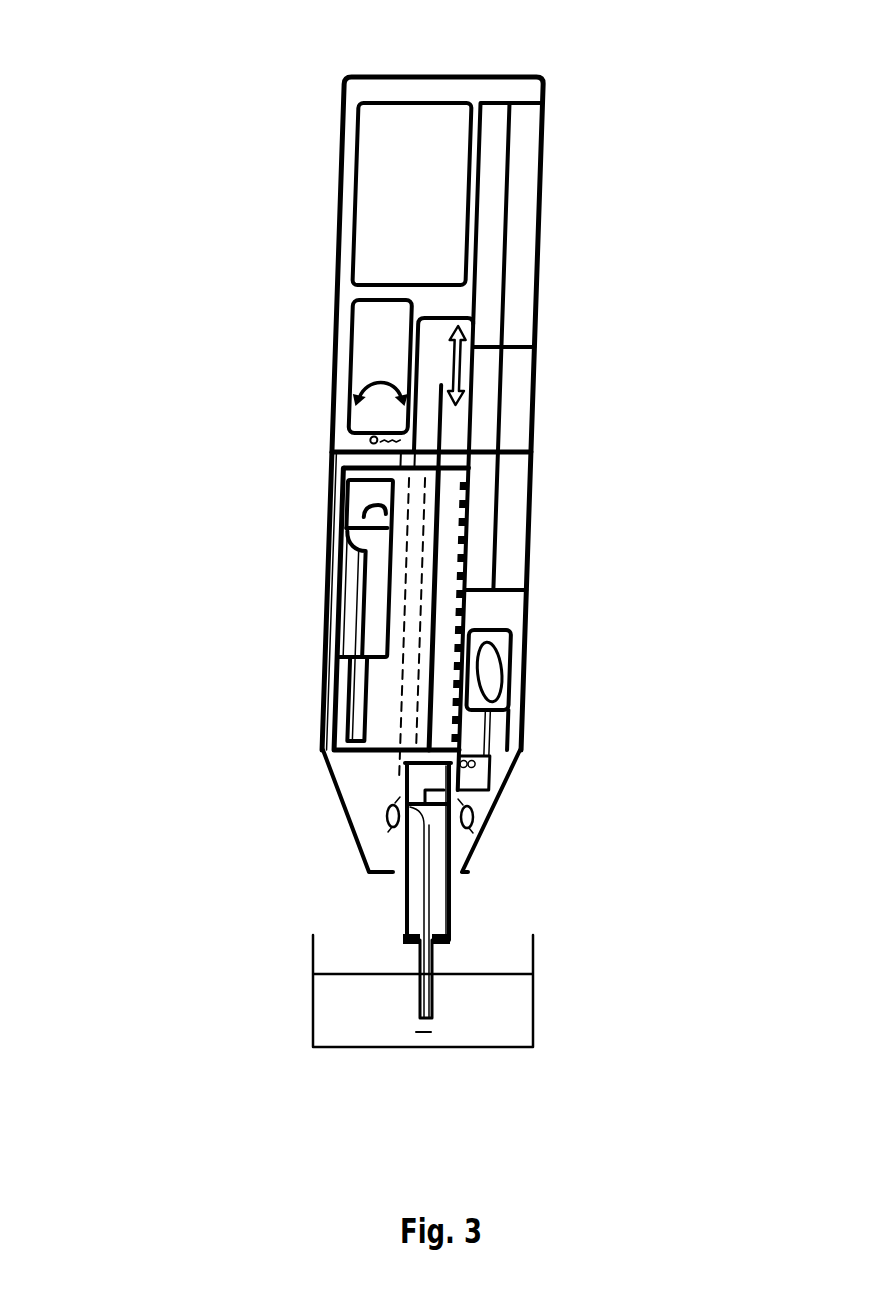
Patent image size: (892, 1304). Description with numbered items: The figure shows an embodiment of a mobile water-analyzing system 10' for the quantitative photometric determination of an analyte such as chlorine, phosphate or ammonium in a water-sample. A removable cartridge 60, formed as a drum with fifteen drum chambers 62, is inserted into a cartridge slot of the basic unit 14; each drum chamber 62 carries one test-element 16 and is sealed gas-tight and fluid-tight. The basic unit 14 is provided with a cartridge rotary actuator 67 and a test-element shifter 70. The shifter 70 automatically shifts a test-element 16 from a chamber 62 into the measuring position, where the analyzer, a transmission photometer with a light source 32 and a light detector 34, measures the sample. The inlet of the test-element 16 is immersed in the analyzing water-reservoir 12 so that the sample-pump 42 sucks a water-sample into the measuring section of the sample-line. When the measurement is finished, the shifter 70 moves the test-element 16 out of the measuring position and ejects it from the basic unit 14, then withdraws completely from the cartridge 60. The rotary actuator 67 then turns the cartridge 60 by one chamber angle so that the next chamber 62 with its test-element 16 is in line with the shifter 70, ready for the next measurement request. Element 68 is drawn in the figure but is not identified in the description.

The mobile water-analyzing system 10' is at (449, 518).
The analyzing water-reservoir 12 is at (425, 1005).
The basic unit 14 is at (432, 433).
The test-element 16 is at (357, 593).
The light source 32 is at (387, 818).
The light detector 34 is at (470, 826).
The sample-pump 42 is at (488, 693).
The removable cartridge 60 is at (401, 609).
The drum chamber 62 is at (433, 626).
The cartridge rotary actuator 67 is at (380, 372).
The linear drive 68 is at (443, 393).
The test-element shifter 70 is at (474, 773).